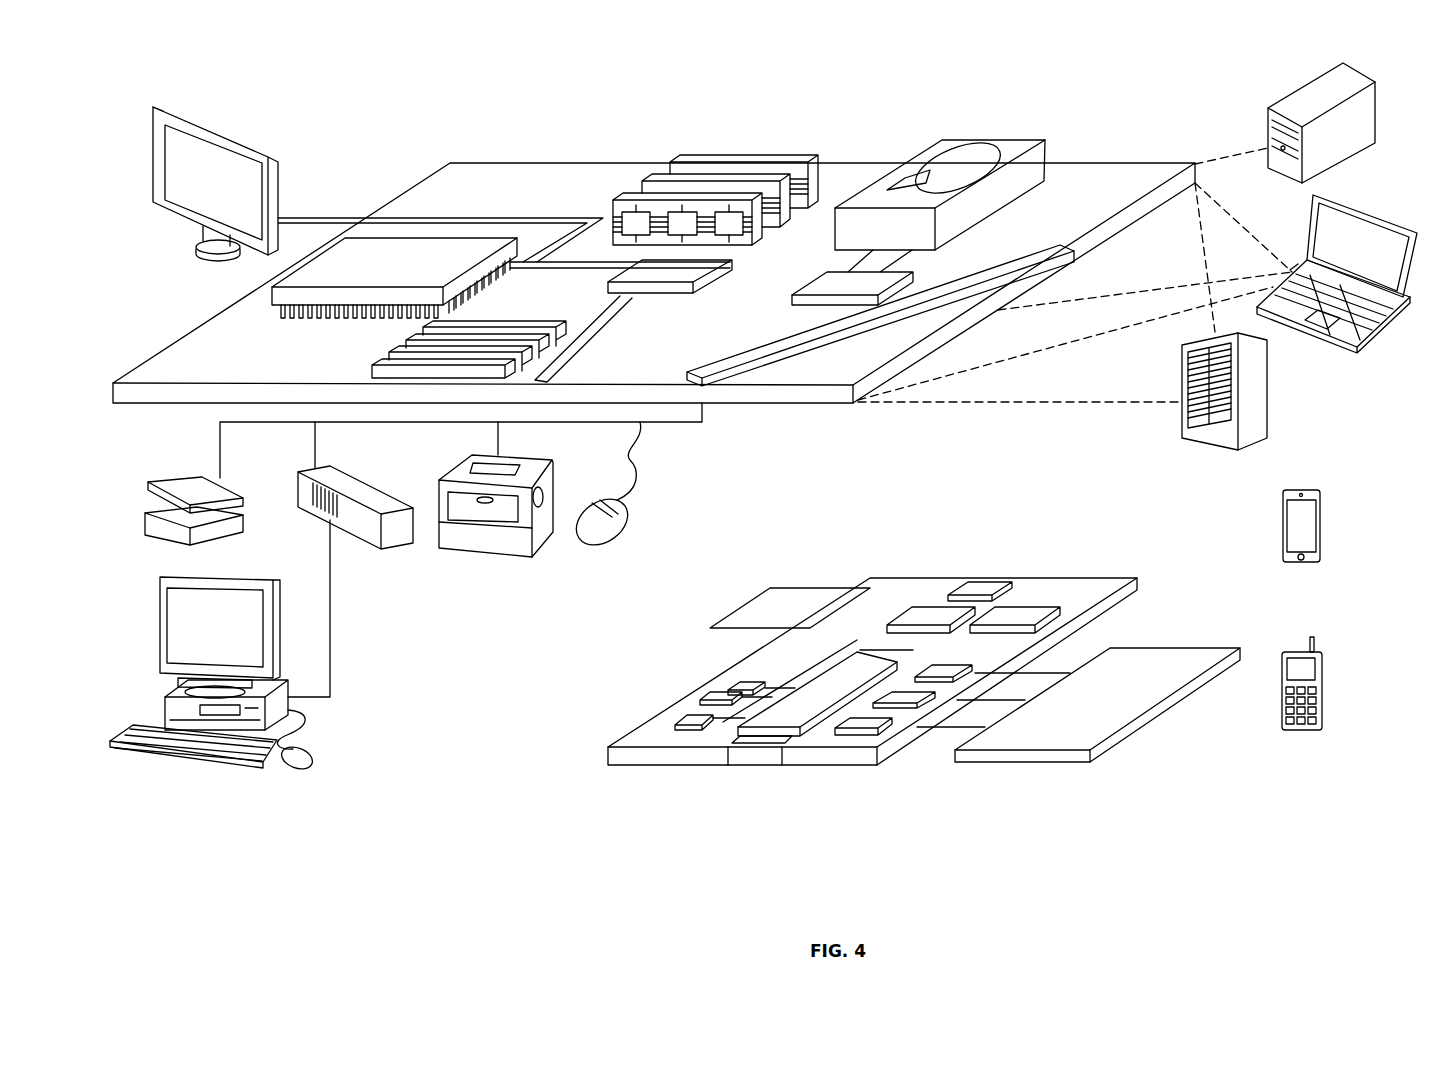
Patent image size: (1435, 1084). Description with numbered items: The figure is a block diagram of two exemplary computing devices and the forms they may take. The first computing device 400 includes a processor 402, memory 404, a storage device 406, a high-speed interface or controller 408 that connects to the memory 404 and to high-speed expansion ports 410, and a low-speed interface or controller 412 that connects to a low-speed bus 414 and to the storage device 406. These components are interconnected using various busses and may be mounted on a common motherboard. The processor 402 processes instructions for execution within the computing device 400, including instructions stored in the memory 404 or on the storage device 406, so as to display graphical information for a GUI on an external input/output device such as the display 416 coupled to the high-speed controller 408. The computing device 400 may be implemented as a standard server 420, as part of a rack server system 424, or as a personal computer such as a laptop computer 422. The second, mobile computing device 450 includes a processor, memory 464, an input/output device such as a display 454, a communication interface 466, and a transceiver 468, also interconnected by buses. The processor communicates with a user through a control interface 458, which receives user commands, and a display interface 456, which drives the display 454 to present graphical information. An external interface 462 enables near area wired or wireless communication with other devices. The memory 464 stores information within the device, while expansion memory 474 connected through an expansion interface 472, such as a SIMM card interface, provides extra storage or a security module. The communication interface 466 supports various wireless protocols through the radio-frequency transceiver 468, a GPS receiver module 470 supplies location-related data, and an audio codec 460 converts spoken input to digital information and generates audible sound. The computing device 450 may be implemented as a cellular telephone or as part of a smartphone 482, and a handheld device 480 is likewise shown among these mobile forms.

The computing device 400 is at (413, 108).
The processor 402 is at (282, 270).
The memory 404 is at (745, 158).
The storage device 406 is at (988, 140).
The high-speed interface or controller 408 is at (685, 275).
The high-speed expansion ports 410 is at (387, 342).
The low-speed interface or controller 412 is at (857, 287).
The low-speed bus 414 is at (713, 358).
The display 416 is at (235, 127).
The standard server 420 is at (1308, 82).
The laptop computer 422 is at (1385, 218).
The rack server system 424 is at (1267, 408).
The computing device 450 is at (593, 769).
The display 454 is at (1142, 667).
The display interface 456 is at (860, 727).
The control interface 458 is at (903, 703).
The audio codec 460 is at (950, 670).
The external interface 462 is at (763, 748).
The memory 464 is at (705, 700).
The communication interface 466 is at (923, 607).
The transceiver 468 is at (1035, 610).
The GPS receiver module 470 is at (980, 585).
The expansion interface 472 is at (853, 588).
The expansion memory 474 is at (768, 588).
The smartphone 480 is at (1322, 525).
The smartphone 482 is at (1322, 673).